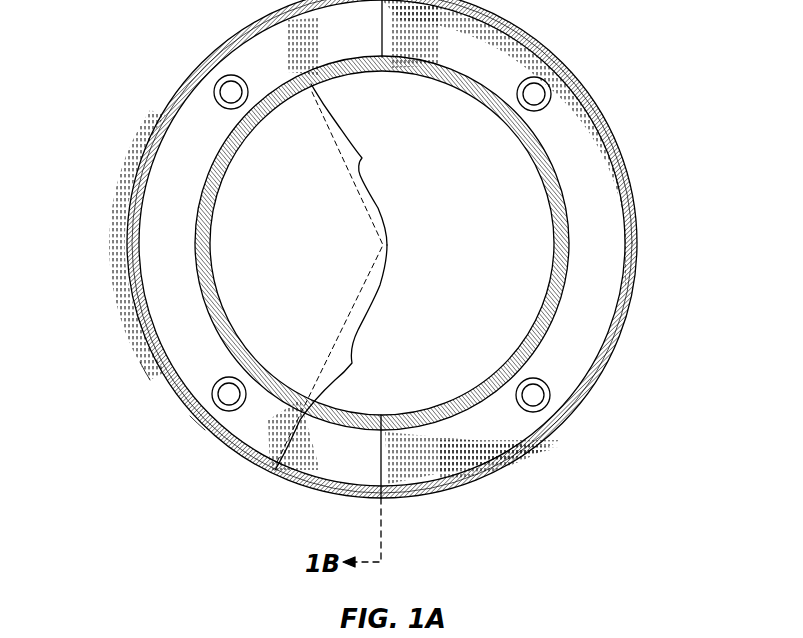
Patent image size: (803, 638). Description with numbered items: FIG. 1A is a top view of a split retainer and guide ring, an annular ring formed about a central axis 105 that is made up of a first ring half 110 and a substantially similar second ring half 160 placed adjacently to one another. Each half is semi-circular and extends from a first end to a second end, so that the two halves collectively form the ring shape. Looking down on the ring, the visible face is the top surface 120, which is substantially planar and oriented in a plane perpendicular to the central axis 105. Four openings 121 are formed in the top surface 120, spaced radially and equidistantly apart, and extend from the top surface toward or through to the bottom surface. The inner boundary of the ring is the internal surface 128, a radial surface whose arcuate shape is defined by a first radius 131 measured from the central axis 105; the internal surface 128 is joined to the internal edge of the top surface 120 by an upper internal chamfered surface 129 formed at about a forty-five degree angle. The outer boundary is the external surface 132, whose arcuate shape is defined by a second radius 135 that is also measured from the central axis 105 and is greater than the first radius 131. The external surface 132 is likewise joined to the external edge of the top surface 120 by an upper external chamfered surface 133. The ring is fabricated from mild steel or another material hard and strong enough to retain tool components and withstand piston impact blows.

The central axis 105 is at (383, 246).
The first ring half 110 is at (160, 178).
The top surface 120 is at (160, 272).
The openings 121 is at (224, 91).
The internal surface 128 is at (212, 265).
The upper internal chamfered surface 129 is at (227, 328).
The first radius 131 is at (361, 159).
The external surface 132 is at (198, 420).
The upper external chamfered surface 133 is at (160, 363).
The second radius 135 is at (352, 364).
The second ring half 160 is at (600, 203).